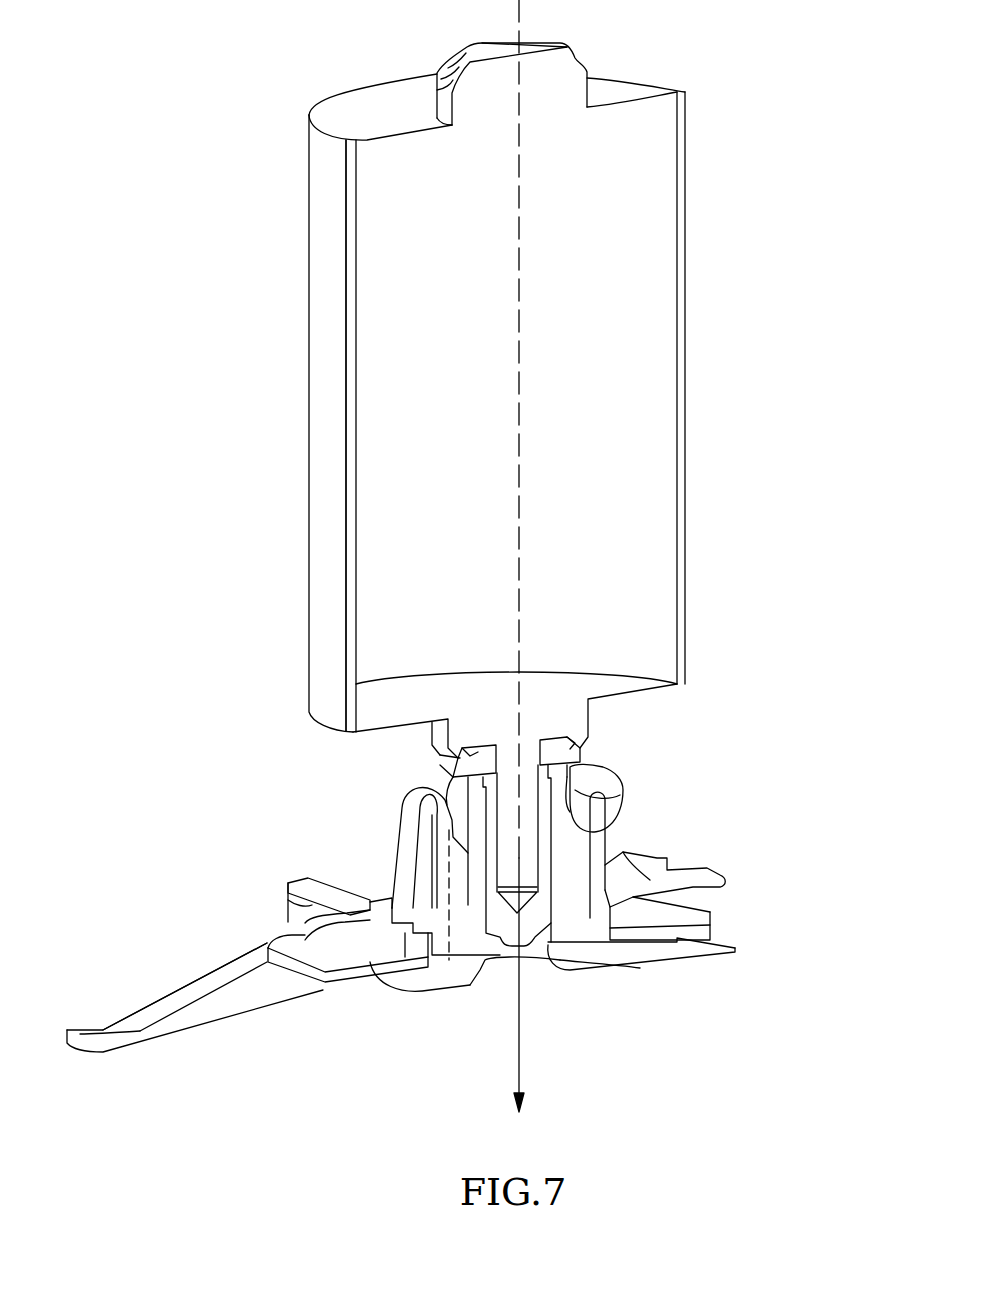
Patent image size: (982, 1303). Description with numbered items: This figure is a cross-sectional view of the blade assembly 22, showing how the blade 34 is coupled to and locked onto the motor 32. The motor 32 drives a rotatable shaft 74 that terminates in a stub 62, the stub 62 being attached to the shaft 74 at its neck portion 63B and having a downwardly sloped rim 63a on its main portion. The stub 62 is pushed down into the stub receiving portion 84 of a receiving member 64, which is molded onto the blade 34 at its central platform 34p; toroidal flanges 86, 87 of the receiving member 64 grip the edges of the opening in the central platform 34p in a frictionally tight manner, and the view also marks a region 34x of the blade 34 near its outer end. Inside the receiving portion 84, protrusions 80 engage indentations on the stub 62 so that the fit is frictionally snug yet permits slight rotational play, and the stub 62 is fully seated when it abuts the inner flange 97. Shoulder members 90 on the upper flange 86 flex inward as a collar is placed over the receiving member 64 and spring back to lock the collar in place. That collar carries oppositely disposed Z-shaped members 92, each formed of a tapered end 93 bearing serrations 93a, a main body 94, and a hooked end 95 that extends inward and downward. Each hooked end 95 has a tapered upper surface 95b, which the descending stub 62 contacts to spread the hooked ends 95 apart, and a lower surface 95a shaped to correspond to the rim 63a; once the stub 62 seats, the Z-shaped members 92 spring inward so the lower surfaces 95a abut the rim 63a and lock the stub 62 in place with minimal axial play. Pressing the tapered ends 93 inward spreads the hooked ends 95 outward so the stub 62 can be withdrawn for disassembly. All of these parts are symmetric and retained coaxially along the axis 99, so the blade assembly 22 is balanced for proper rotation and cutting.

The blade assembly 22 is at (700, 270).
The motor 32 is at (322, 381).
The neck portion 63B is at (603, 765).
The rotatable shaft 74 is at (467, 792).
The stub 62 is at (572, 926).
The hooked end 95 is at (590, 795).
The lower surface 95a is at (600, 815).
The upper surface 95b is at (447, 800).
The downwardly sloped rim 63a is at (603, 835).
The tapered end 93 is at (697, 880).
The stub receiving portion 84 is at (627, 862).
The central platform 34p is at (688, 928).
The protrusions 80 is at (403, 850).
The shoulder members 90 is at (458, 868).
The main body 94 is at (406, 850).
The Z-shaped members 92 is at (380, 818).
The serrations 93a is at (316, 900).
The upper flange 86 is at (385, 980).
The toroidal flange 87 is at (380, 985).
The inner flange 97 is at (472, 978).
The receiving member 64 is at (626, 973).
The blade 34 is at (224, 1026).
The arm tip 34x is at (143, 1019).
The axis 99 is at (522, 1080).